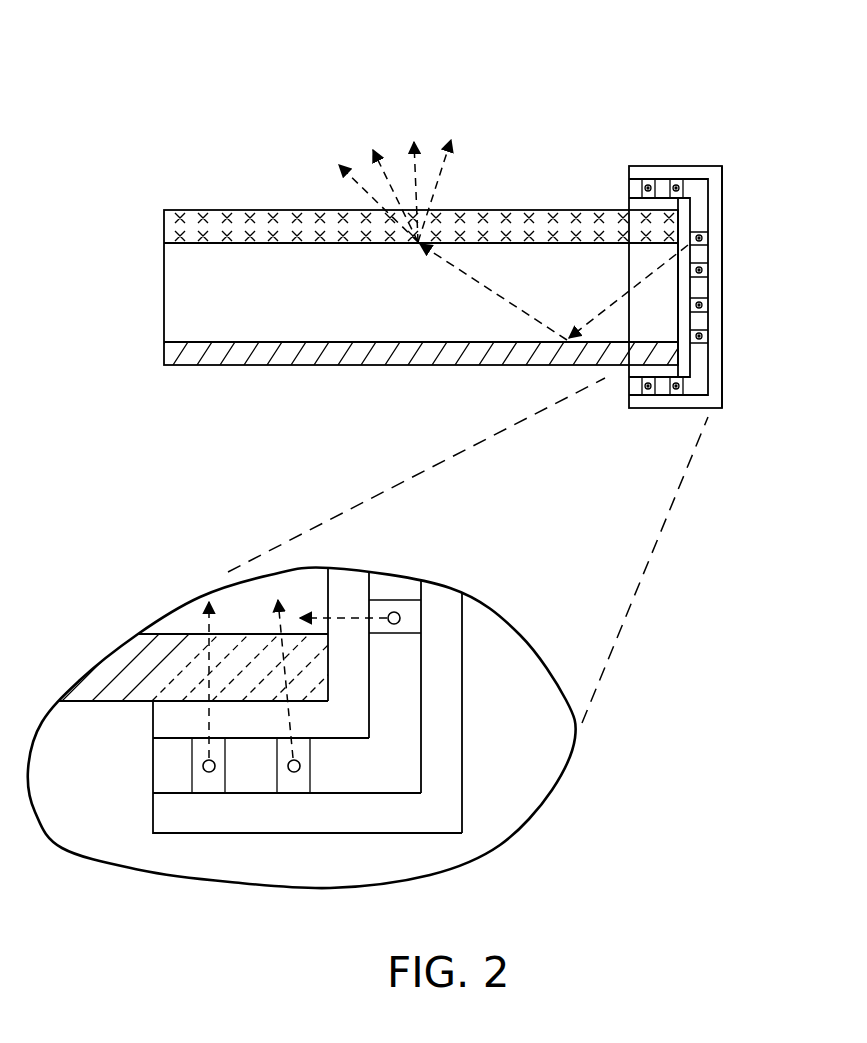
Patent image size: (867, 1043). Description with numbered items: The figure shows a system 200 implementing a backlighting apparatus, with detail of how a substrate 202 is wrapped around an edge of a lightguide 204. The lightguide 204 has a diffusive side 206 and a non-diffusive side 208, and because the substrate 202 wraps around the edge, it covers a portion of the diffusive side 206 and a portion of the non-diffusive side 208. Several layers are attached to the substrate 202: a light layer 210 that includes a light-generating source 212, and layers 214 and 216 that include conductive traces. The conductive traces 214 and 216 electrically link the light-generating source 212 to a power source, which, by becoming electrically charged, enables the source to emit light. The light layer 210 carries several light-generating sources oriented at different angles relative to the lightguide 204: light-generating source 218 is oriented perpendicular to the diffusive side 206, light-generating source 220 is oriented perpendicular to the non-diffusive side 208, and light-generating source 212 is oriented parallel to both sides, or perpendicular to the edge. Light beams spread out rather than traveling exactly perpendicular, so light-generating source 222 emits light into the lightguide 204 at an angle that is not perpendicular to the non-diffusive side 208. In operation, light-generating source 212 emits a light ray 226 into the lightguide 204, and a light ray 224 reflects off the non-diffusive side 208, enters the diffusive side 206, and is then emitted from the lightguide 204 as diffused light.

The system 200 is at (436, 303).
The substrate 202 is at (653, 165).
The lightguide 204 is at (162, 283).
The diffusive side 206 is at (217, 210).
The non-diffusive side 208 is at (398, 367).
The light layer 210 is at (625, 190).
The light-generating source 212 is at (699, 235).
The conductive trace layer 214 is at (682, 360).
The conductive trace layer 216 is at (717, 402).
The light-generating source 218 is at (680, 180).
The light-generating source 220 is at (642, 397).
The light-generating source 222 is at (300, 765).
The light ray 224 is at (487, 297).
The light ray 226 is at (350, 142).